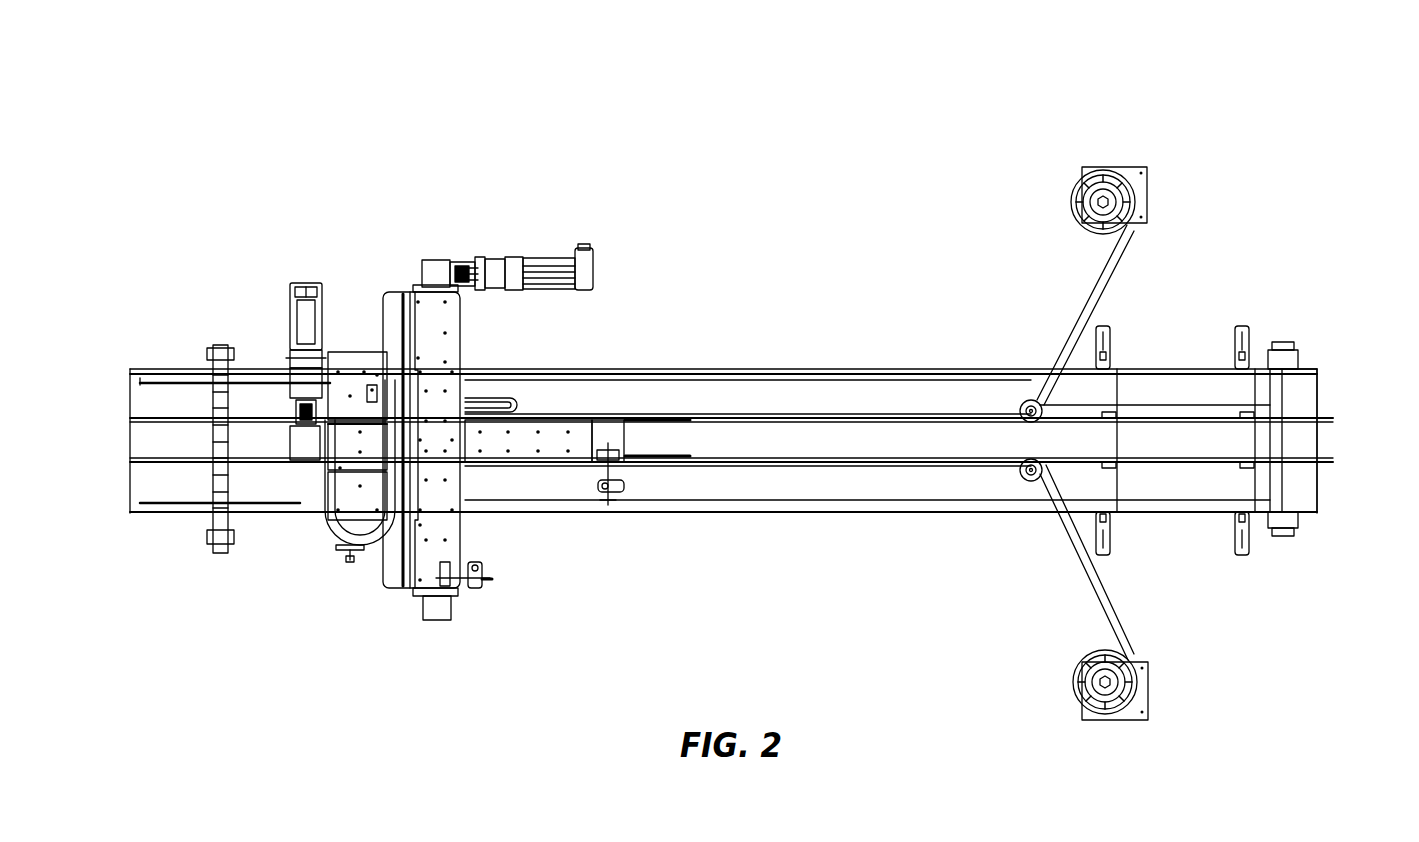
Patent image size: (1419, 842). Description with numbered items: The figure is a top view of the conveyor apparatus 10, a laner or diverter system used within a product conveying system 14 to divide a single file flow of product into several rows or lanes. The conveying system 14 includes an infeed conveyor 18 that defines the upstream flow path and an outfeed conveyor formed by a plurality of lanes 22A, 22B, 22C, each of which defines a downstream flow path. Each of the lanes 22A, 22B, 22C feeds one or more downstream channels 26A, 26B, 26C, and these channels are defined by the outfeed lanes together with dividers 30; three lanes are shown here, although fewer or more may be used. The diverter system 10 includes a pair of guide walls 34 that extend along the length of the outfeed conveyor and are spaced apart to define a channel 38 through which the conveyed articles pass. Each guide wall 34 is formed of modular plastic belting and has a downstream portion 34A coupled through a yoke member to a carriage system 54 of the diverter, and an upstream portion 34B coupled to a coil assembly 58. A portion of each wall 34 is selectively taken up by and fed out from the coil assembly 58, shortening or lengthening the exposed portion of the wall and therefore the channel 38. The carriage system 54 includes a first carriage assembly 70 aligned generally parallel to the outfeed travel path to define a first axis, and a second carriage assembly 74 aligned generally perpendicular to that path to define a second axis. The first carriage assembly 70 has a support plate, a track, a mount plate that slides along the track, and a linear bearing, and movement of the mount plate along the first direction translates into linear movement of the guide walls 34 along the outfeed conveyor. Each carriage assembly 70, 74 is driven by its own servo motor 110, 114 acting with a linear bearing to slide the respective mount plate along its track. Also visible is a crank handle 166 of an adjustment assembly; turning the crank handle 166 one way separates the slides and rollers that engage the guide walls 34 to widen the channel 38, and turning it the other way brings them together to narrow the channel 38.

The conveyor apparatus 10 is at (811, 213).
The conveying system 14 is at (944, 66).
The infeed conveyor 18 is at (1305, 440).
The lane 22A is at (908, 435).
The lane 22B is at (1005, 392).
The lane 22C is at (930, 480).
The downstream channel 26A is at (160, 440).
The downstream channel 26B is at (162, 400).
The downstream channel 26C is at (190, 482).
The dividers 30 is at (146, 420).
The guide walls 34 is at (742, 415).
The downstream portion 34A is at (648, 478).
The upstream portion 34B is at (986, 470).
The channel 38 is at (808, 441).
The carriage system 54 is at (409, 255).
The coil assembly 58 is at (1143, 150).
The first carriage assembly 70 is at (563, 418).
The second carriage assembly 74 is at (461, 314).
The servo motor 110 is at (290, 312).
The servo motor 114 is at (545, 256).
The crank handle 166 is at (348, 555).